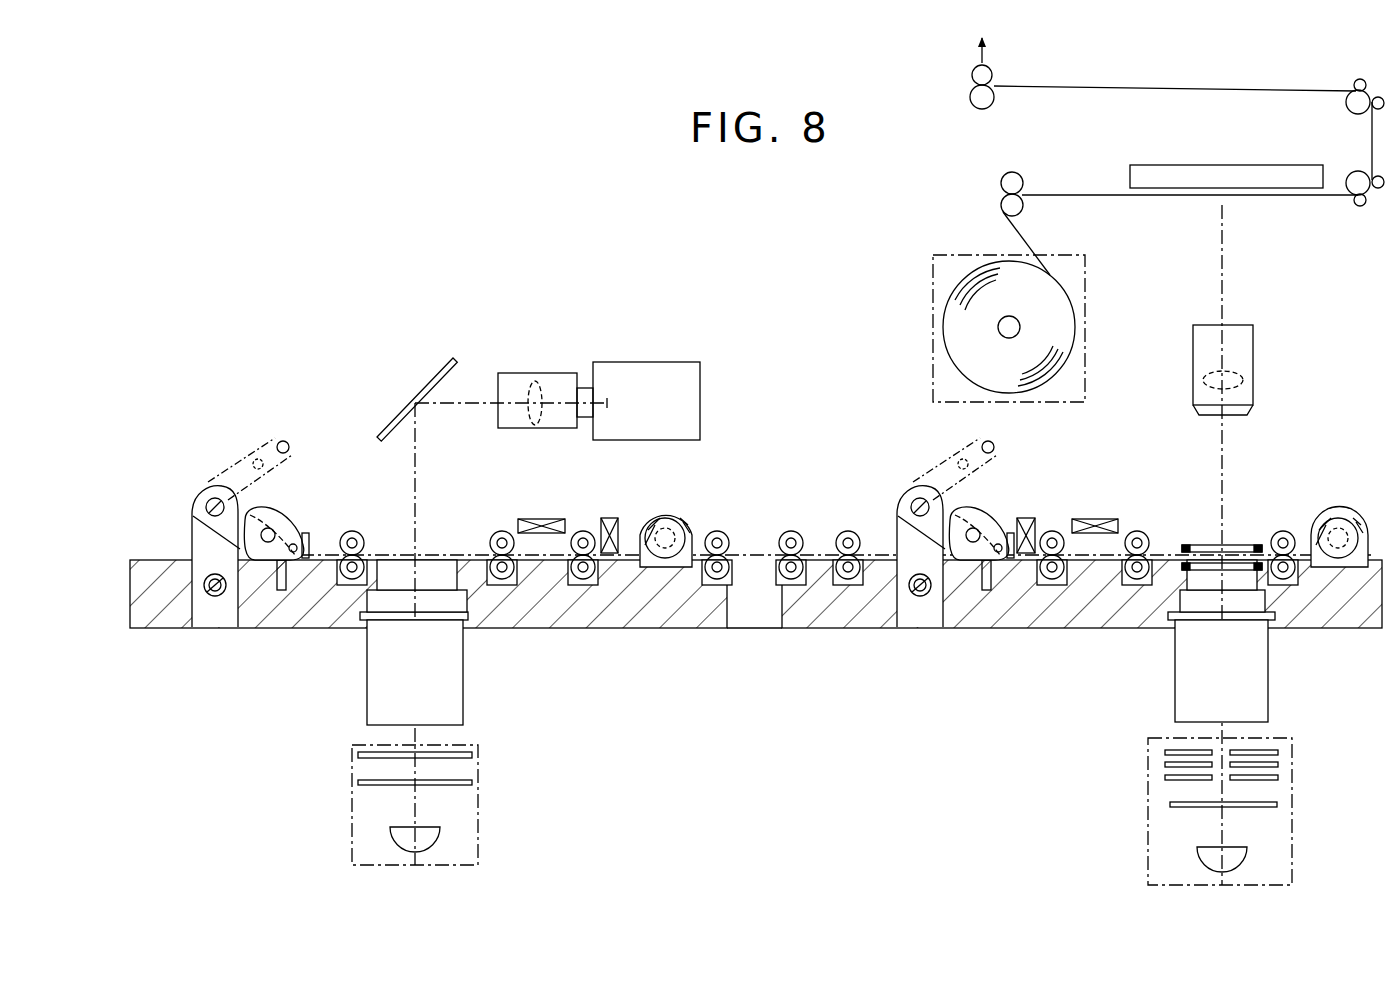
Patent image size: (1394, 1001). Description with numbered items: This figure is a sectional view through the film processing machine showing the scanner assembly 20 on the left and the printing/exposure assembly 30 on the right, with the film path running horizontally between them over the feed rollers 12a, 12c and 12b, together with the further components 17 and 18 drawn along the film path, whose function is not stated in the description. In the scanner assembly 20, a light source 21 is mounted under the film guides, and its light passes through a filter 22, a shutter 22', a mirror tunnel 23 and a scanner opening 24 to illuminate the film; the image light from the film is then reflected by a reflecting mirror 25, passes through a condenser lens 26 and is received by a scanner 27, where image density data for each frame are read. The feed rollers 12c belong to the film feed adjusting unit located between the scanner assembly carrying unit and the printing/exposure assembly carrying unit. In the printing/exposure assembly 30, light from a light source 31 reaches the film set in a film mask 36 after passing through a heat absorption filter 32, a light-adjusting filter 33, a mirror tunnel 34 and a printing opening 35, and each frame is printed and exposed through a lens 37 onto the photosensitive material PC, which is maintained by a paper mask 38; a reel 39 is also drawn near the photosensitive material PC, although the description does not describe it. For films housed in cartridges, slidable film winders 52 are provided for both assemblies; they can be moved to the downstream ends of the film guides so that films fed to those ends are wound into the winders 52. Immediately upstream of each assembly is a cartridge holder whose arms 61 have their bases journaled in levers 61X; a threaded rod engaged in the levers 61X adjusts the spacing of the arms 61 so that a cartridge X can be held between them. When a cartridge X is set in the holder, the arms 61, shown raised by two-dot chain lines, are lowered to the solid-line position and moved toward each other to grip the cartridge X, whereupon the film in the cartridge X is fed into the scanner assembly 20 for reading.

The feed rollers 12a is at (352, 531).
The feed rollers 12b is at (1052, 531).
The feed rollers 12c is at (791, 531).
The sensor 17 is at (538, 519).
The guide member 18 is at (608, 518).
The scanner assembly 20 is at (385, 405).
The light source 21 is at (440, 827).
The filter 22 is at (461, 787).
The shutter 22' is at (463, 745).
The mirror tunnel 23 is at (450, 682).
The scanner opening 24 is at (432, 572).
The reflecting mirror 25 is at (423, 383).
The condenser lens 26 is at (521, 373).
The scanner 27 is at (630, 378).
The printing/exposure assembly 30 is at (1255, 505).
The light source 31 is at (1247, 847).
The heat absorption filter 32 is at (1278, 805).
The light-adjusting filter 33 is at (1278, 764).
The mirror tunnel 34 is at (1255, 677).
The printing opening 35 is at (1243, 590).
The film mask 36 is at (1262, 540).
The lens 37 is at (1250, 358).
The paper mask 38 is at (1200, 175).
The take-up reel 39 is at (1088, 305).
The film winders 52 is at (665, 517).
The arms 61 is at (215, 480).
The levers 61X is at (202, 543).
The cartridge X is at (275, 510).
The photosensitive material PC is at (1072, 195).